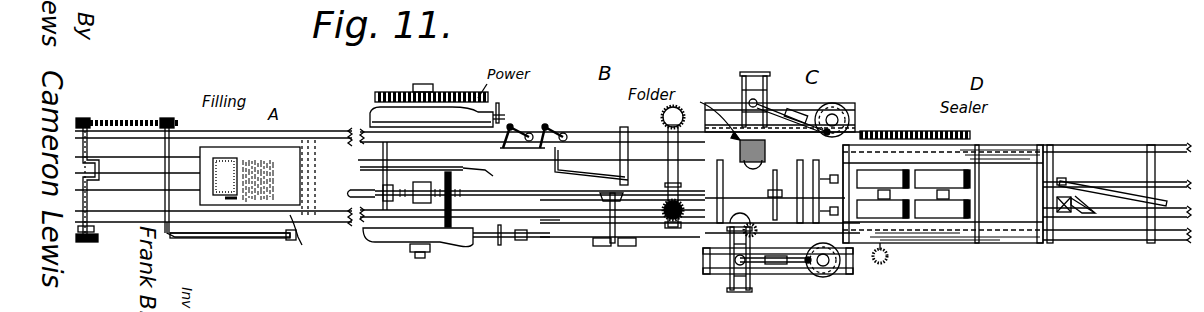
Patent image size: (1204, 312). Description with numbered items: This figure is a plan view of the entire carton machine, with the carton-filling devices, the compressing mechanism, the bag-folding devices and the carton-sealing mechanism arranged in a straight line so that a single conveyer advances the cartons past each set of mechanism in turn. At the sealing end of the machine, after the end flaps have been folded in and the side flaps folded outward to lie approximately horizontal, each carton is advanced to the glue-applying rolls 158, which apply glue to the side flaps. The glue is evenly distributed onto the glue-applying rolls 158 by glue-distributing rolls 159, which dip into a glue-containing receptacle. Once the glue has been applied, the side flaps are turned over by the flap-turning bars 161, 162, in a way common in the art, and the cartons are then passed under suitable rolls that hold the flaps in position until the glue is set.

The glue-applying rolls 158 is at (976, 178).
The glue-distributing rolls 159 is at (885, 178).
The flap-turning bar 161 is at (1078, 213).
The flap-turning bar 162 is at (1108, 190).